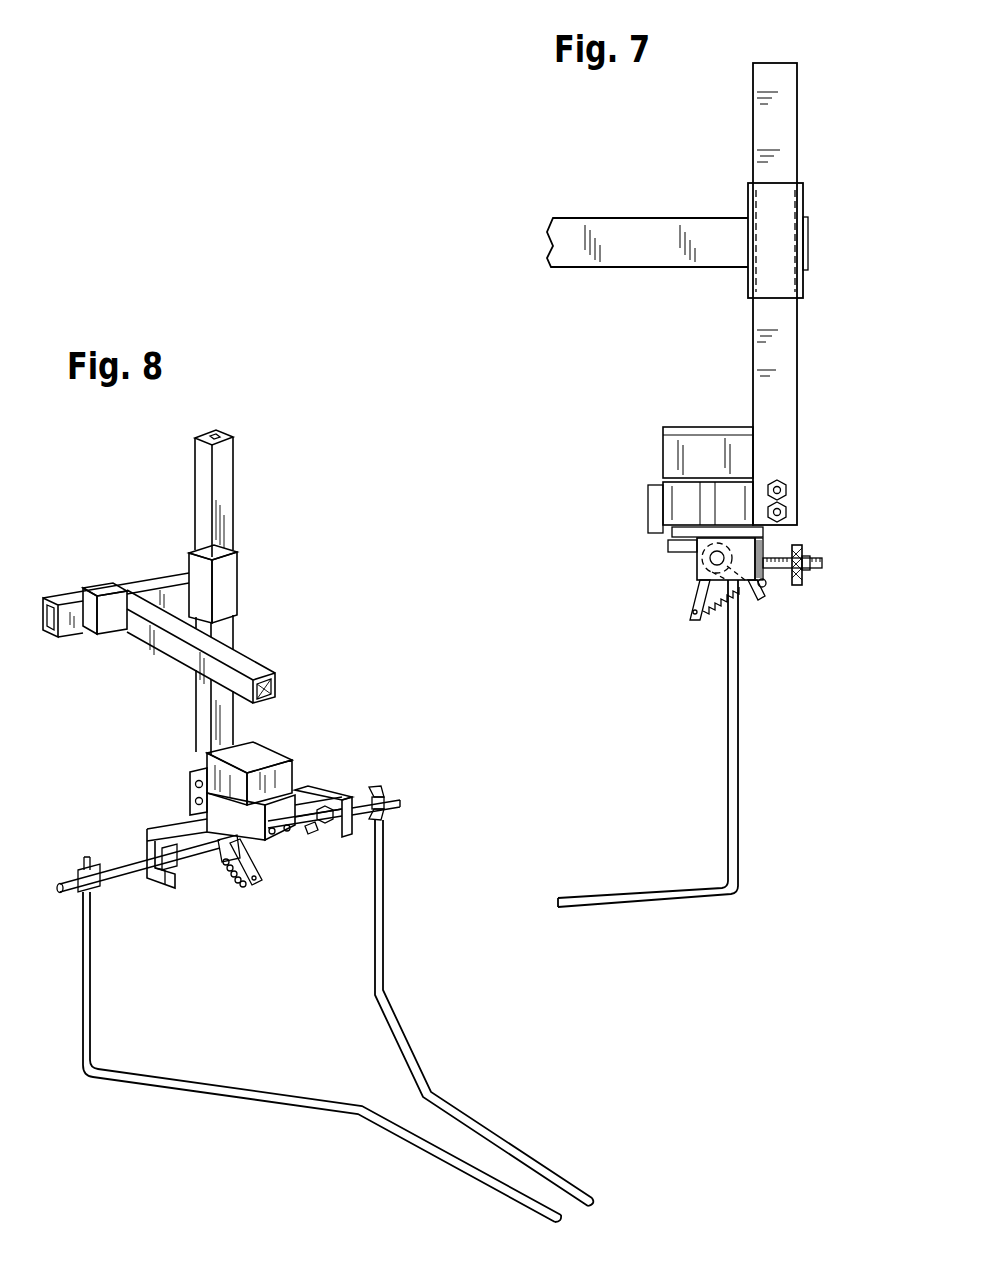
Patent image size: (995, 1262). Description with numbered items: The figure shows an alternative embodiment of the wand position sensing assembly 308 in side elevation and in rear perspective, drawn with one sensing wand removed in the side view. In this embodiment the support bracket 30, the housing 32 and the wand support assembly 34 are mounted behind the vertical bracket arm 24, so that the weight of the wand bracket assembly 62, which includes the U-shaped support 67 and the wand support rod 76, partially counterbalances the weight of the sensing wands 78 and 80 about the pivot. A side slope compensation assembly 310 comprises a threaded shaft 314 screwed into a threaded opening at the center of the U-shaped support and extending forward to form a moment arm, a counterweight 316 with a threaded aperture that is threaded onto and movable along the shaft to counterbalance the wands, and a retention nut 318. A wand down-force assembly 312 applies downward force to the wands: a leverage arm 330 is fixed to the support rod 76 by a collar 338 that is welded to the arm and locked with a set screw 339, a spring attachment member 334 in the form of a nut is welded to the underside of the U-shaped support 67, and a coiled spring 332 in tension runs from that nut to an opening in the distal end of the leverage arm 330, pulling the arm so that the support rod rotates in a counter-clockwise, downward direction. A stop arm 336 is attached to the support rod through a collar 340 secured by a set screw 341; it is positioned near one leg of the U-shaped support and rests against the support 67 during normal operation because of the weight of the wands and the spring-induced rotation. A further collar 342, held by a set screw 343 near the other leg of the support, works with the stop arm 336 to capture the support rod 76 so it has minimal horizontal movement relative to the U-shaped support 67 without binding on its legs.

In FIG. 7, the vertical bracket arm 24 is at (790, 364).
In FIG. 7, the support bracket 30 is at (710, 497).
In FIG. 7, the housing 32 is at (665, 455).
In FIG. 7, the wand support assembly 34 is at (595, 533).
In FIG. 7, the wand bracket assembly 62 is at (690, 556).
In FIG. 7, the U-shaped support 67 is at (715, 572).
In FIG. 8, the U-shaped support 67 is at (297, 795).
In FIG. 7, the wand support rod 76 is at (710, 560).
In FIG. 8, the wand support rod 76 is at (123, 860).
In FIG. 7, the sensing wand 78 is at (738, 823).
In FIG. 8, the sensing wand 78 is at (257, 1100).
In FIG. 8, the sensing wand 80 is at (418, 1057).
In FIG. 7, the wand position sensing assembly 308 is at (645, 294).
In FIG. 8, the wand position sensing assembly 308 is at (168, 732).
In FIG. 7, the side slope compensation assembly 310 is at (784, 628).
In FIG. 7, the wand down-force assembly 312 is at (680, 626).
In FIG. 8, the wand down-force assembly 312 is at (222, 925).
In FIG. 7, the threaded shaft 314 is at (775, 558).
In FIG. 7, the counterweight 316 is at (802, 550).
In FIG. 7, the retention nut 318 is at (806, 572).
In FIG. 7, the leverage arm 330 is at (698, 598).
In FIG. 8, the leverage arm 330 is at (240, 887).
In FIG. 7, the coiled spring 332 is at (713, 612).
In FIG. 8, the coiled spring 332 is at (232, 875).
In FIG. 7, the spring attachment member 334 is at (766, 588).
In FIG. 8, the spring attachment member 334 is at (245, 872).
In FIG. 7, the stop arm 336 is at (763, 600).
In FIG. 8, the stop arm 336 is at (320, 835).
In FIG. 8, the collar 338 is at (200, 818).
In FIG. 8, the set screw 339 is at (260, 868).
In FIG. 8, the collar 340 is at (345, 798).
In FIG. 8, the set screw 341 is at (320, 805).
In FIG. 8, the collar 342 is at (205, 878).
In FIG. 8, the set screw 343 is at (173, 838).